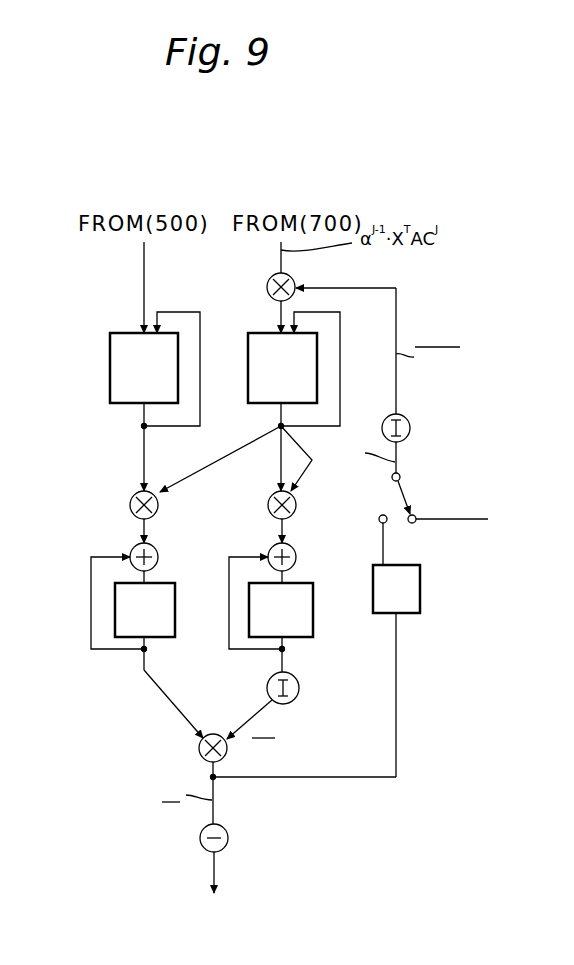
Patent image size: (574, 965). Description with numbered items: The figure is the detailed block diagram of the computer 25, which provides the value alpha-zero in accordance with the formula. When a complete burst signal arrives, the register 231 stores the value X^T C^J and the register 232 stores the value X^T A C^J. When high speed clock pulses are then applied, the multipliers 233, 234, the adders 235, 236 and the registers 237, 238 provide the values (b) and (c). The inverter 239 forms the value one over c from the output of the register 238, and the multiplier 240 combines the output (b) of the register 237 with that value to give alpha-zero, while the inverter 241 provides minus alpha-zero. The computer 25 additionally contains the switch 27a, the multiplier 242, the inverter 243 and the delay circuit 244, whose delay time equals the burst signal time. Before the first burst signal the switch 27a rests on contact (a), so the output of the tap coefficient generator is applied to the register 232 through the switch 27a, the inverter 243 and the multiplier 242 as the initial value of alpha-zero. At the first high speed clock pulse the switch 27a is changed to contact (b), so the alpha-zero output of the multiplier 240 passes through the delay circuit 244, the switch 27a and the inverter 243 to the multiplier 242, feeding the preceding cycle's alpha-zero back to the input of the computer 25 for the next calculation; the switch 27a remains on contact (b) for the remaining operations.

The computer 25 is at (452, 300).
The register 231 is at (110, 376).
The register 232 is at (317, 373).
The multiplier 233 is at (158, 509).
The multiplier 234 is at (296, 505).
The adder 235 is at (158, 552).
The adder 236 is at (296, 553).
The register 237 is at (175, 618).
The register 238 is at (313, 618).
The inverter 239 is at (299, 692).
The multiplier 240 is at (199, 748).
The inverter 241 is at (228, 840).
The multiplier 242 is at (295, 280).
The inverter 243 is at (410, 424).
The delay circuit 244 is at (420, 596).
The switch 27a is at (405, 485).